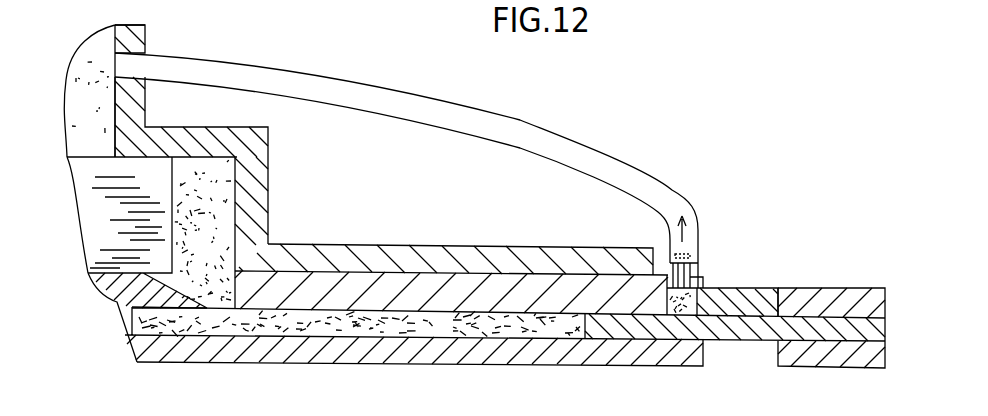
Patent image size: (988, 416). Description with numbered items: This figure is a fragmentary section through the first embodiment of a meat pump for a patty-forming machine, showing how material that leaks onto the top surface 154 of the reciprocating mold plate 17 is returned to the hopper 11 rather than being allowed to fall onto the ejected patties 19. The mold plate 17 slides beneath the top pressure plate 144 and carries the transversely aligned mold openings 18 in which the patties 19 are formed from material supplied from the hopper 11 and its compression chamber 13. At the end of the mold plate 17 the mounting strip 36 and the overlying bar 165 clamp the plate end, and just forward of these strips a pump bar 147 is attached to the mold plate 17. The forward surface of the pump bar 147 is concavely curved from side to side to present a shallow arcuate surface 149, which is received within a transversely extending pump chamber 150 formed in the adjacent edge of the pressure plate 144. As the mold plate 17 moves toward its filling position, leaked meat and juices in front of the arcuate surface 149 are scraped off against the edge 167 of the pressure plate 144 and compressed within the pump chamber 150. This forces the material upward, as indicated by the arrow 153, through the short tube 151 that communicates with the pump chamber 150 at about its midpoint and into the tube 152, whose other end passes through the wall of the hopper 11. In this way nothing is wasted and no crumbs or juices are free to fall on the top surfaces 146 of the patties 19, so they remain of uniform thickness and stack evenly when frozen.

The hopper 11 is at (142, 34).
The compression chamber 13 is at (268, 197).
The mold plate 17 is at (745, 342).
The mold openings 18 is at (533, 358).
The patties 19 is at (423, 325).
The mounting strip 36 is at (840, 367).
The pressure plate 144 is at (456, 285).
The top surfaces 146 is at (352, 305).
The pump bar 147 is at (768, 290).
The arcuate surface 149 is at (704, 286).
The pump chamber 150 is at (672, 316).
The short tube 151 is at (700, 268).
The tube 152 is at (350, 82).
The arrow 153 is at (672, 233).
The top surface of the mold plate 154 is at (107, 302).
The bar 165 is at (835, 295).
The edge 167 is at (682, 318).